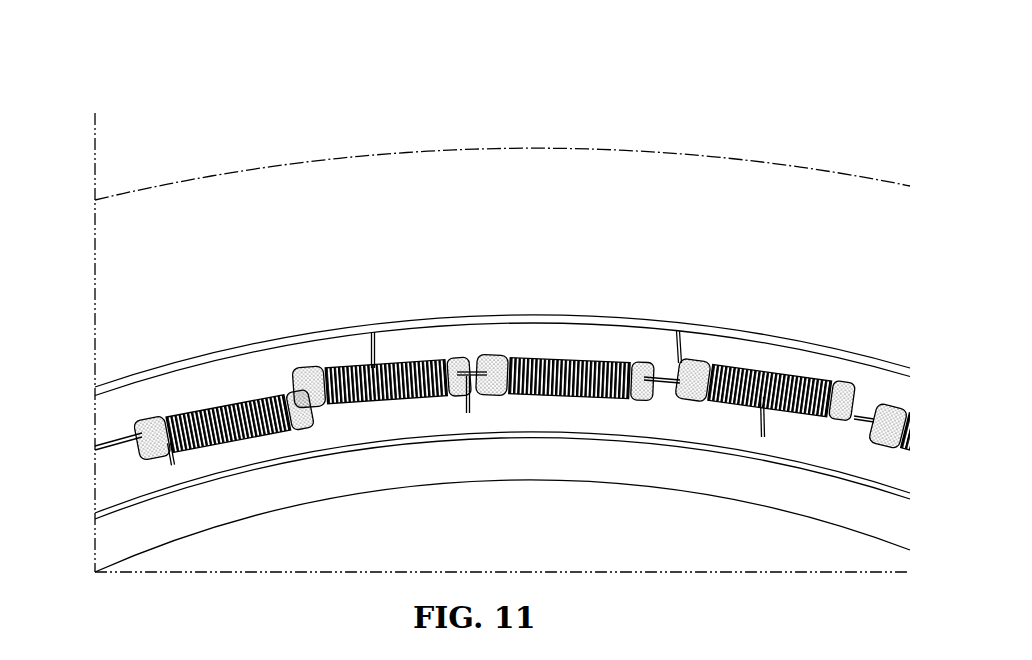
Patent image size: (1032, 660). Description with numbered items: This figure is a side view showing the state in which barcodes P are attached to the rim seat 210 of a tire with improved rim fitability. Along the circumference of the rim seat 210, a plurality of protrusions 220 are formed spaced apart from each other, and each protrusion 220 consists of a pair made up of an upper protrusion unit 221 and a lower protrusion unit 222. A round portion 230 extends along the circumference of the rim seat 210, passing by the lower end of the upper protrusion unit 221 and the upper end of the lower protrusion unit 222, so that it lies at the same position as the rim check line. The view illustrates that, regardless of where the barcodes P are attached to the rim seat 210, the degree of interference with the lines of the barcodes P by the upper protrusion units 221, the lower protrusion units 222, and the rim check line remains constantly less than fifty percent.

The rim seat 210 is at (260, 375).
The protrusion 220 is at (579, 248).
The upper protrusion unit 221 is at (378, 366).
The lower protrusion unit 222 is at (469, 398).
The barcode P is at (700, 365).
The round portion 230 is at (127, 433).